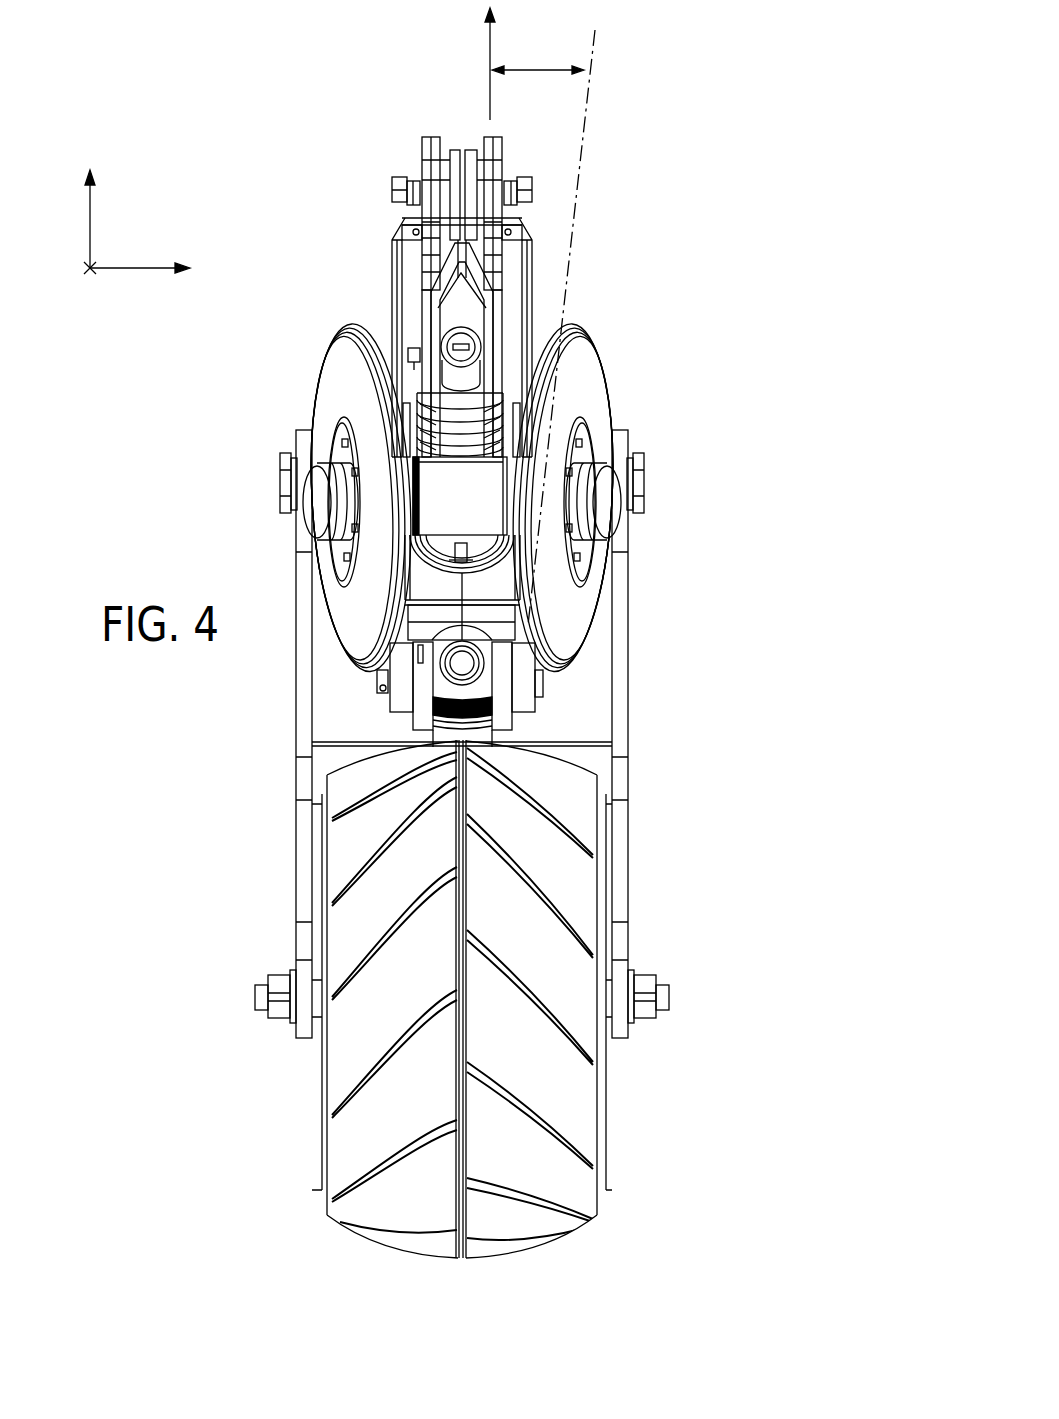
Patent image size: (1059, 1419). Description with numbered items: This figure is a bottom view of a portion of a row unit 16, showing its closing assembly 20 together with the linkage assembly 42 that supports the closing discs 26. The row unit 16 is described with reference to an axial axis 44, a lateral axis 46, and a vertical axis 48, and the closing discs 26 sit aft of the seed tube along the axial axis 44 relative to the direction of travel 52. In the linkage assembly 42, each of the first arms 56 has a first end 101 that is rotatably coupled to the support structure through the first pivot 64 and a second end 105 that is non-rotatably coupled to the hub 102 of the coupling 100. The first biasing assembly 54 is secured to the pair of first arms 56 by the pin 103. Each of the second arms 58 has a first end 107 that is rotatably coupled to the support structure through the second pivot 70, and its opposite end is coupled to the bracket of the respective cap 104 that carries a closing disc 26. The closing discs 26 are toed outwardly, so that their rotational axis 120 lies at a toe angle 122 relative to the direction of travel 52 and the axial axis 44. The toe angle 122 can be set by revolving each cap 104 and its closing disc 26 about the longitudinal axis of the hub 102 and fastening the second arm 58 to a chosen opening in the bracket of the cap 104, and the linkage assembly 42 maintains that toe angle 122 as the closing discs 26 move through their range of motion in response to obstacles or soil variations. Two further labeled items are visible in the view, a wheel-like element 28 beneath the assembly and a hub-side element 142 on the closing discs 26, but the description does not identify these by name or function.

The row unit 16 is at (699, 146).
The closing assembly 20 is at (697, 444).
The closing discs 26 is at (607, 372).
The tire 28 is at (598, 1195).
The linkage assembly 42 is at (343, 293).
The axial axis 44 is at (88, 225).
The lateral axis 46 is at (135, 268).
The vertical axis 48 is at (86, 268).
The direction of travel 52 is at (490, 42).
The first biasing assembly 54 is at (464, 400).
The first arms 56 is at (496, 292).
The second arms 58 is at (532, 240).
The first pivot 64 is at (500, 175).
The second pivot 70 is at (400, 180).
The coupling 100 is at (486, 580).
The first end 101 is at (452, 155).
The hub 102 is at (475, 515).
The pin 103 is at (410, 355).
The cap 104 is at (410, 470).
The second end 105 is at (490, 440).
The first end 107 is at (405, 230).
The rotational axis 120 is at (582, 148).
The toe angle 122 is at (540, 68).
The hub cap 142 is at (594, 515).